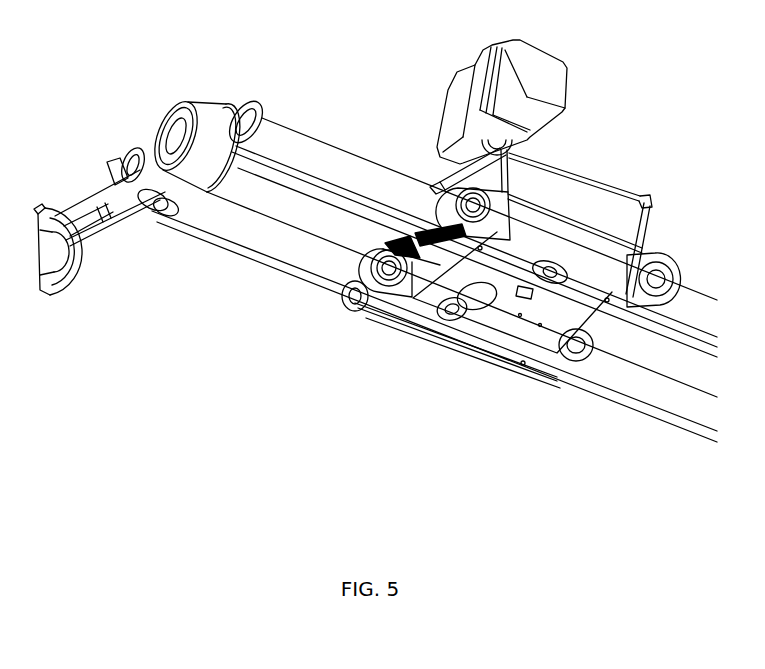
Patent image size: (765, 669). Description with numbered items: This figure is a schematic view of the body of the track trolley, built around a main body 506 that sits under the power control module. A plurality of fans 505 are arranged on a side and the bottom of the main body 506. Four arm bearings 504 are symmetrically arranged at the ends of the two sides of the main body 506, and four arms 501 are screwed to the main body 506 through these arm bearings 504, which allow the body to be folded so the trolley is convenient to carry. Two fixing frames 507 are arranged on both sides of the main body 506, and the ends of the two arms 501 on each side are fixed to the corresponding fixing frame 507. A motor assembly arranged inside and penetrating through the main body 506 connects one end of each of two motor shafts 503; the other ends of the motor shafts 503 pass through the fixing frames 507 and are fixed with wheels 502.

The arm 501 is at (346, 173).
The wheel 502 is at (202, 157).
The motor shaft 503 is at (315, 202).
The arm bearing 504 is at (453, 210).
The fan 505 is at (459, 323).
The main body 506 is at (505, 323).
The fixing frame 507 is at (252, 100).